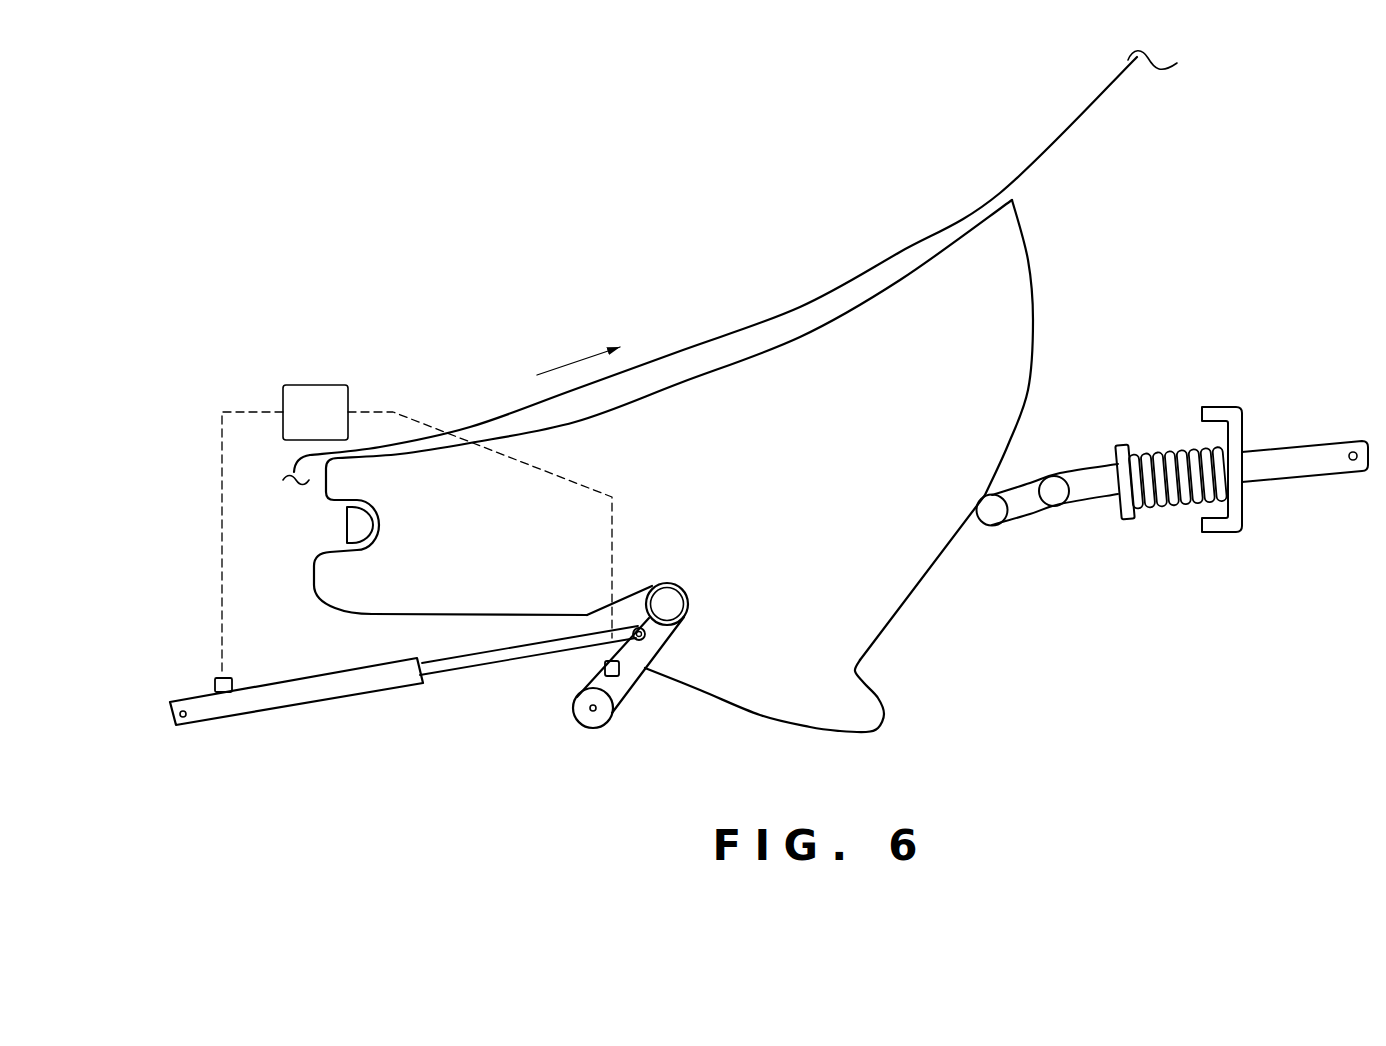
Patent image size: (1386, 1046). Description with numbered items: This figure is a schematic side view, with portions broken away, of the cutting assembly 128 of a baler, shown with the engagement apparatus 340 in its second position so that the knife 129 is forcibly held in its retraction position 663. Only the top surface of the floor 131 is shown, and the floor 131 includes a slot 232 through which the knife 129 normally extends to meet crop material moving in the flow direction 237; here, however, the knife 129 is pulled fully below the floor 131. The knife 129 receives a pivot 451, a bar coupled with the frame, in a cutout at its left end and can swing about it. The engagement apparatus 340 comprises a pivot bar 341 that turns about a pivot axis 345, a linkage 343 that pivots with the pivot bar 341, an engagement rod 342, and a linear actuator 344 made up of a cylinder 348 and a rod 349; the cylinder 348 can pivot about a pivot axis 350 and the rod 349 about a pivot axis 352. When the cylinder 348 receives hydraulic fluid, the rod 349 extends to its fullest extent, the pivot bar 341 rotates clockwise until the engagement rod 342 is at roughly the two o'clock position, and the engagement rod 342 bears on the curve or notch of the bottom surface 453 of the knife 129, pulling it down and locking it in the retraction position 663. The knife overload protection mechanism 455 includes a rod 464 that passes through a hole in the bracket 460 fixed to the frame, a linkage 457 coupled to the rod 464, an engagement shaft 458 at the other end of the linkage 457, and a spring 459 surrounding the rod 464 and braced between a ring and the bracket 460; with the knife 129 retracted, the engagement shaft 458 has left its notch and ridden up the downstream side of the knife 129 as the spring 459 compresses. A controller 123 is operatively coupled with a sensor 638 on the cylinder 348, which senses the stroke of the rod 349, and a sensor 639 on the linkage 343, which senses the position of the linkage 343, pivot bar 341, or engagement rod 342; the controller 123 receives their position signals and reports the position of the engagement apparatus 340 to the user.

The controller 123 is at (296, 426).
The cutting assembly 128 is at (387, 217).
The knife 129 is at (1033, 312).
The floor 131 is at (1107, 102).
The slot 232 is at (836, 288).
The flow direction 237 is at (568, 365).
The engagement apparatus 340 is at (308, 787).
The pivot bar 341 is at (613, 706).
The engagement rod 342 is at (684, 626).
The linkage 343 is at (590, 682).
The linear actuator 344 is at (430, 748).
The pivot axis 345 is at (591, 713).
The cylinder 348 is at (318, 703).
The rod 349 is at (481, 668).
The pivot axis 350 is at (184, 718).
The pivot axis 352 is at (647, 636).
The pivot 451 is at (343, 527).
The bottom surface 453 is at (637, 598).
The knife overload protection mechanism 455 is at (1255, 370).
The linkage 457 is at (1023, 483).
The engagement shaft 458 is at (993, 526).
The spring 459 is at (1172, 500).
The bracket 460 is at (1228, 530).
The rod 464 is at (1302, 440).
The sensor 638 is at (218, 679).
The sensor 639 is at (621, 668).
The retraction position 663 is at (1030, 212).